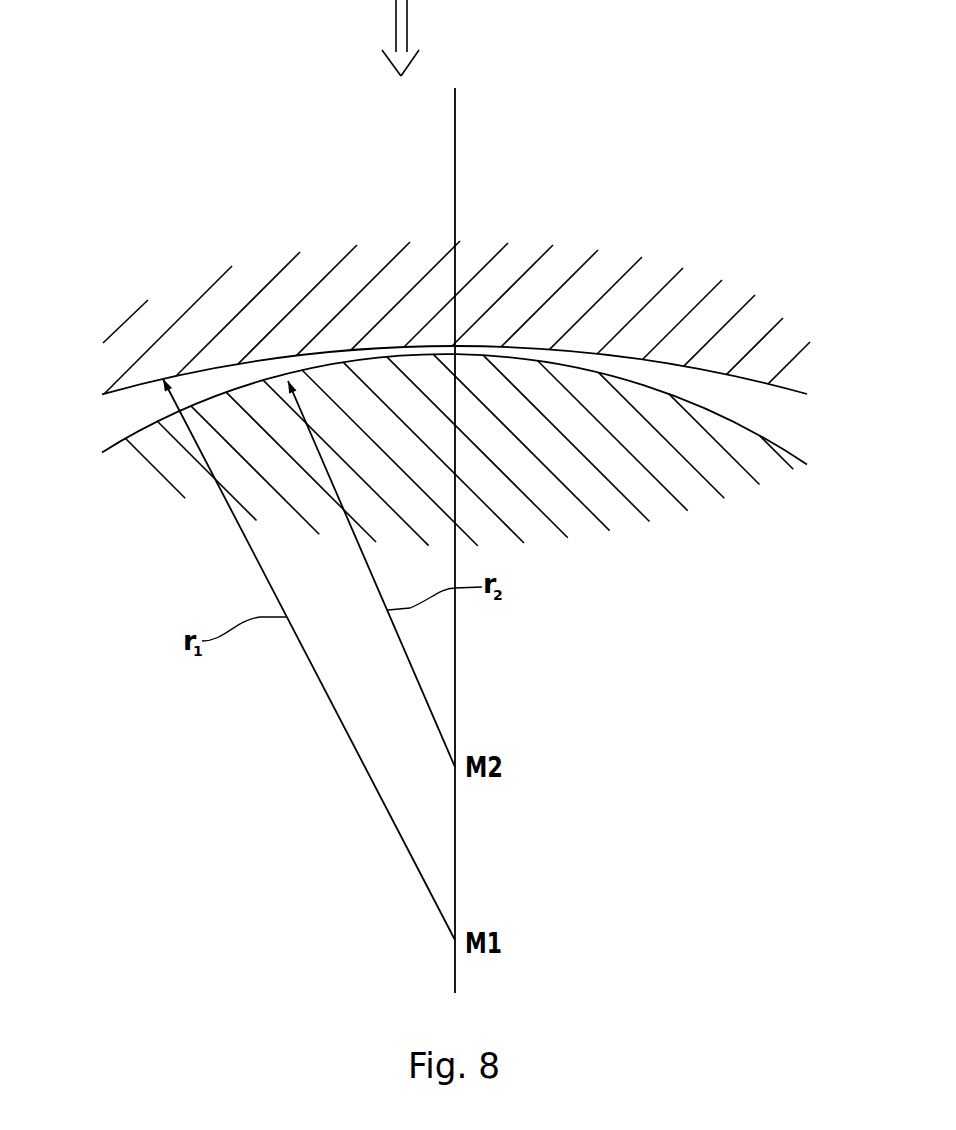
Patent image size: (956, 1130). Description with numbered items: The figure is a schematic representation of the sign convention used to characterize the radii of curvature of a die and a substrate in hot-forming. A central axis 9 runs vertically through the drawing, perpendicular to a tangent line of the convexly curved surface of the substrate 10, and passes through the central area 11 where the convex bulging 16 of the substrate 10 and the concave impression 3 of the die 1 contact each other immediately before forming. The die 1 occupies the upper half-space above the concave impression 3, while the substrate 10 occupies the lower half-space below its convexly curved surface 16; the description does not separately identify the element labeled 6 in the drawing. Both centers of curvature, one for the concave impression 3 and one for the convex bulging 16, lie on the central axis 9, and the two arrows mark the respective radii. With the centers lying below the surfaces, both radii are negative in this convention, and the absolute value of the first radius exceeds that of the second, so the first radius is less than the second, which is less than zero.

The die 1 is at (767, 313).
The concave impression 3 is at (126, 385).
The lens element 6 is at (757, 413).
The central axis 9 is at (456, 137).
The substrate 10 is at (770, 470).
The central area 11 is at (460, 346).
The convex bulging 16 is at (137, 447).